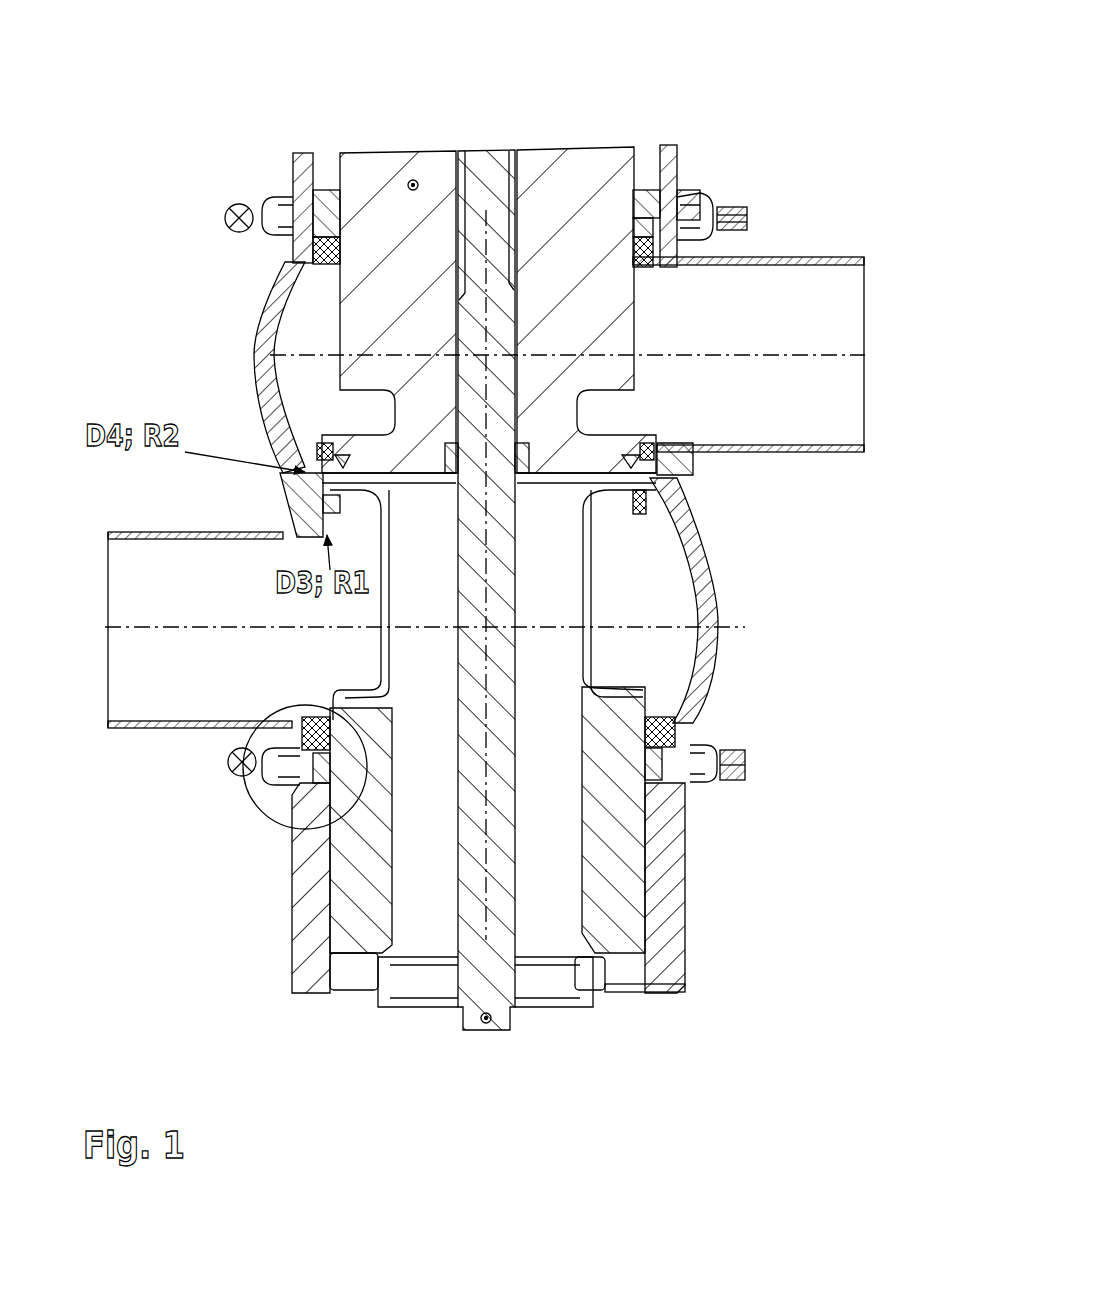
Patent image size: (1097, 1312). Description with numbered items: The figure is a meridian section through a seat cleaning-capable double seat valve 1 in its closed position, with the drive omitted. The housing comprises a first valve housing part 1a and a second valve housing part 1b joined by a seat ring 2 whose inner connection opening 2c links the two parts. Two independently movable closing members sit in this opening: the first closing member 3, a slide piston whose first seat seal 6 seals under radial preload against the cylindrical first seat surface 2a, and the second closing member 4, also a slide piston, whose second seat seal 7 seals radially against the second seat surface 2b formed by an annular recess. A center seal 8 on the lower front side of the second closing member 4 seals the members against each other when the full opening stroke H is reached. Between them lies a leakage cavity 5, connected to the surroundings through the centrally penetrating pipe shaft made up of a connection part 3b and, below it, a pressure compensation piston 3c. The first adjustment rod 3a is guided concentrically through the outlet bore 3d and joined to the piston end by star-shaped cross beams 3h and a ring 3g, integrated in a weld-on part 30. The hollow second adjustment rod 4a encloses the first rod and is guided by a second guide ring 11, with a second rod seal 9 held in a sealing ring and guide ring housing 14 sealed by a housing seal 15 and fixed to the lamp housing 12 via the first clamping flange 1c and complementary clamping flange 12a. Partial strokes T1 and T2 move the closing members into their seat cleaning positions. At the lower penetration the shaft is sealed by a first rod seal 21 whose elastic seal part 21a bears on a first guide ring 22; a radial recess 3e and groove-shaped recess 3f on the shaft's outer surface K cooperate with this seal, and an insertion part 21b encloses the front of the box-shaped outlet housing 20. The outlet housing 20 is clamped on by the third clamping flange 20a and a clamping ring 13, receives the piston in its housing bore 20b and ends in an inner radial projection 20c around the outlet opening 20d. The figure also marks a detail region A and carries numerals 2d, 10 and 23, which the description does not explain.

The double seat valve 1 is at (762, 500).
The first valve housing part 1a is at (700, 575).
The second valve housing part 1b is at (266, 345).
The first clamping flange 1c is at (281, 228).
The seat ring 2 is at (298, 502).
The first seat surface 2a is at (381, 537).
The second seat surface 2b is at (417, 462).
The connection opening 2c is at (585, 620).
The housing seal 2d is at (324, 460).
The first closing member 3 is at (664, 590).
The first adjustment rod 3a is at (413, 134).
The connection part 3b is at (588, 622).
The pressure compensation piston 3c is at (612, 870).
The outlet bore 3d is at (420, 880).
The radial recess 3e is at (643, 690).
The groove-shaped recess 3f is at (653, 764).
The ring 3g is at (377, 987).
The cross beams 3h is at (423, 985).
The second closing member 4 is at (592, 450).
The second adjustment rod 4a is at (568, 183).
The leakage cavity 5 is at (545, 497).
The first seat seal 6 is at (633, 535).
The second seat seal 7 is at (655, 465).
The center seal 8 is at (636, 458).
The second rod seal 9 is at (287, 253).
The pipe connection 10 is at (697, 473).
The second guide ring 11 is at (648, 213).
The lamp housing 12 is at (303, 165).
The complementary clamping flange 12a is at (283, 197).
The clamping ring 13 is at (263, 217).
The sealing ring and guide ring housing 14 is at (668, 183).
The housing seal 15 is at (663, 253).
The outlet housing 20 is at (312, 947).
The third clamping flange 20a is at (288, 772).
The housing bore 20b is at (667, 977).
The inner radial projection 20c is at (650, 993).
The outlet opening 20d is at (627, 993).
The first rod seal 21 is at (693, 740).
The elastic seal part 21a is at (328, 722).
The insertion part 21b is at (307, 722).
The first guide ring 22 is at (677, 770).
The seal 23 is at (663, 813).
The weld-on part 30 is at (628, 1072).
The full opening stroke H is at (486, 200).
The first partial stroke T1 is at (486, 1030).
The second partial stroke T2 is at (413, 185).
The outer surface K is at (386, 734).
The detail A is at (266, 810).